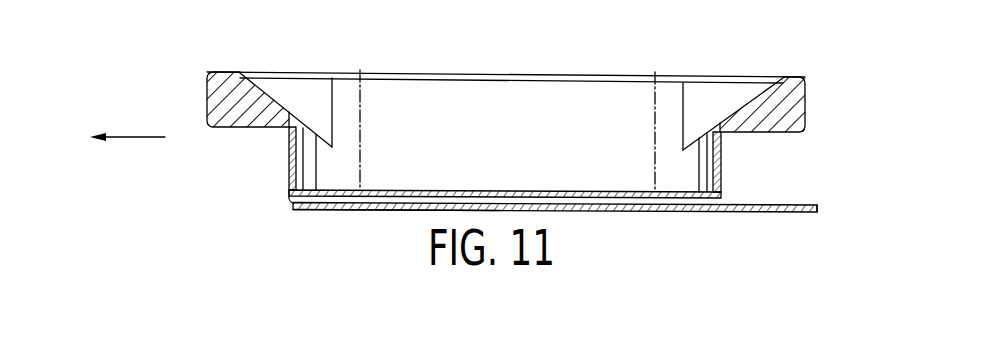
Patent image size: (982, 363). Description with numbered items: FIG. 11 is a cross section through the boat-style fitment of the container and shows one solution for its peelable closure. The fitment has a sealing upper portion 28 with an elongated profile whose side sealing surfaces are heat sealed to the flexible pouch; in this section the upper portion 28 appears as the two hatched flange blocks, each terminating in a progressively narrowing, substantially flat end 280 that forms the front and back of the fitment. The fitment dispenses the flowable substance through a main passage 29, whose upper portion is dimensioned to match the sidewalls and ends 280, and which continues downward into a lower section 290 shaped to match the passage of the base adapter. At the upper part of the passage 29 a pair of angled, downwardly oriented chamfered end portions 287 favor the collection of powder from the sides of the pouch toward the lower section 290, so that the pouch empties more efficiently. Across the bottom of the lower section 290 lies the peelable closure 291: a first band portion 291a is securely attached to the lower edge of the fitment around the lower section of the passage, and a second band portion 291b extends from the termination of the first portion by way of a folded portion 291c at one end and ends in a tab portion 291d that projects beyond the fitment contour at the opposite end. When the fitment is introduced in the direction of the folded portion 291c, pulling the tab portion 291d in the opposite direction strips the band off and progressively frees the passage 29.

The sealing upper portion 28 is at (822, 80).
The main passage 29 is at (463, 68).
The progressively narrowing opposite end 280 is at (784, 79).
The chamfered end portion 287 is at (281, 107).
The lower section 290 is at (378, 166).
The peelable closure band 291 is at (667, 219).
The first band portion 291a is at (478, 191).
The second band portion 291b is at (372, 210).
The folded portion 291c is at (290, 197).
The tab portion 291d is at (798, 219).